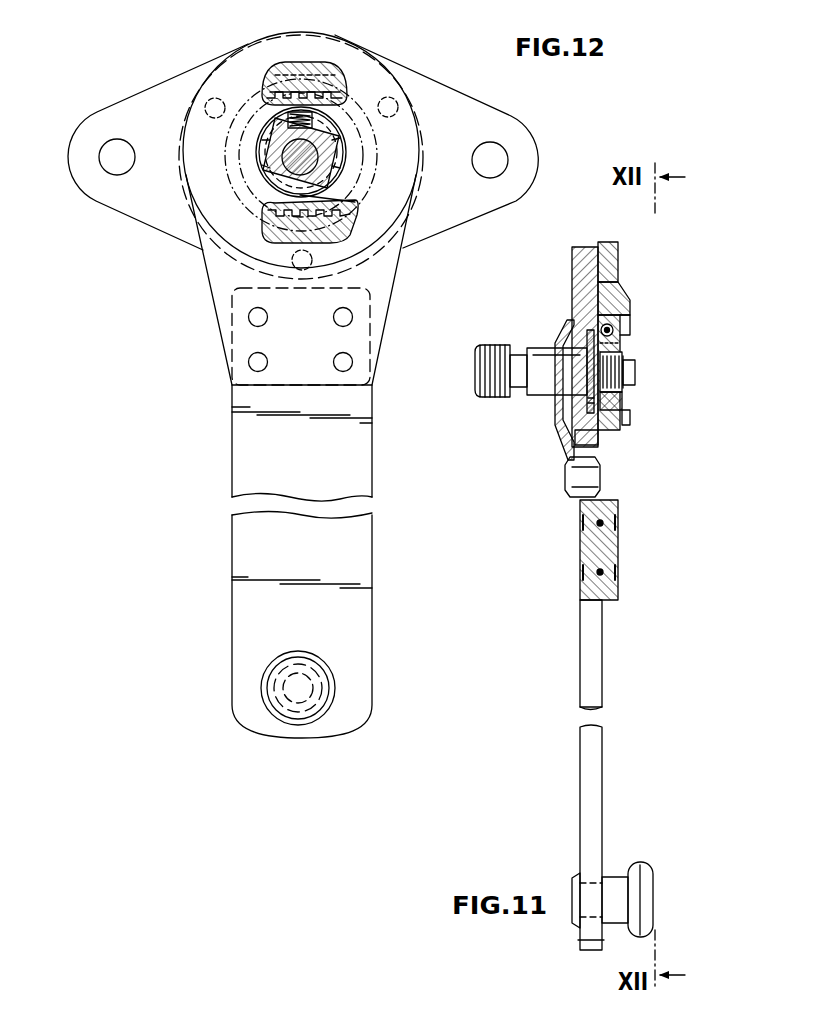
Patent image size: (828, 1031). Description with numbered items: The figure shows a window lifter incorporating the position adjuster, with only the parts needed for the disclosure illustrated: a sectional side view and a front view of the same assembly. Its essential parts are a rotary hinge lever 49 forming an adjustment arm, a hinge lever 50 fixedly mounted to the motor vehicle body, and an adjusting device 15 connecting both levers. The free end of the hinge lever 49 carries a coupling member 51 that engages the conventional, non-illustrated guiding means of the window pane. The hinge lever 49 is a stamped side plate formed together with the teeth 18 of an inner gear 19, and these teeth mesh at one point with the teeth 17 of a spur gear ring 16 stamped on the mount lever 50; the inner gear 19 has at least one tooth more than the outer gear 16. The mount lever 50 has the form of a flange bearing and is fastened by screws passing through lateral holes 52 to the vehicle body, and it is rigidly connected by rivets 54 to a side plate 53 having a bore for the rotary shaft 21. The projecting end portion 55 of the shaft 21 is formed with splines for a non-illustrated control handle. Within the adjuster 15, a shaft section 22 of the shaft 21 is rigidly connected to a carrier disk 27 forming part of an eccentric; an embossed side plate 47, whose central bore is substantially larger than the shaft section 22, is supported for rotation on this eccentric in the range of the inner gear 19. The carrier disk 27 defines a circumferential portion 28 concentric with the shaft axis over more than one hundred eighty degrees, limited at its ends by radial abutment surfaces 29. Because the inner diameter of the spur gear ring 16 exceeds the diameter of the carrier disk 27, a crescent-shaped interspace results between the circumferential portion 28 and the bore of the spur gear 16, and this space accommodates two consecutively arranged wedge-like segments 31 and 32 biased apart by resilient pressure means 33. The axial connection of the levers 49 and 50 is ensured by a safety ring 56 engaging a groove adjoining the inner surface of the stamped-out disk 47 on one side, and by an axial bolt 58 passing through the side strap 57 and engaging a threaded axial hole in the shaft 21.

In FIG. 12, the adjusting device 15 is at (245, 90).
In FIG. 11, the adjusting device 15 is at (565, 290).
In FIG. 11, the spur gear ring 16 is at (575, 335).
In FIG. 12, the teeth of spur gear ring 17 is at (270, 80).
In FIG. 11, the teeth of spur gear ring 17 is at (632, 318).
In FIG. 12, the teeth of inner gear 18 is at (295, 70).
In FIG. 11, the teeth of inner gear 18 is at (612, 292).
In FIG. 11, the inner gear 19 is at (608, 262).
In FIG. 11, the rotary shaft 21 is at (507, 345).
In FIG. 12, the shaft section 22 is at (268, 188).
In FIG. 11, the shaft section 22 is at (624, 362).
In FIG. 12, the carrier disk 27 is at (335, 190).
In FIG. 11, the carrier disk 27 is at (624, 398).
In FIG. 12, the circumferential portion 28 is at (345, 145).
In FIG. 12, the radial abutment surfaces 29 is at (262, 174).
In FIG. 12, the wedge-like segment 31 is at (262, 138).
In FIG. 12, the wedge-like segment 32 is at (330, 120).
In FIG. 12, the resilient pressure means 33 is at (315, 100).
In FIG. 11, the resilient pressure means 33 is at (620, 346).
In FIG. 11, the side plate 47 is at (614, 331).
In FIG. 12, the rotary hinge lever 49 is at (250, 338).
In FIG. 11, the rotary hinge lever 49 is at (612, 549).
In FIG. 12, the hinge lever 50 is at (458, 92).
In FIG. 11, the hinge lever 50 is at (585, 250).
In FIG. 12, the coupling member 51 is at (262, 680).
In FIG. 11, the coupling member 51 is at (617, 872).
In FIG. 12, the lateral holes 52 is at (115, 152).
In FIG. 11, the side plate 53 is at (578, 442).
In FIG. 12, the rivets 54 is at (395, 100).
In FIG. 11, the rivets 54 is at (568, 478).
In FIG. 11, the projecting end portion 55 is at (490, 400).
In FIG. 11, the safety ring 56 is at (590, 400).
In FIG. 11, the side strap 57 is at (628, 422).
In FIG. 11, the axial bolt 58 is at (635, 376).